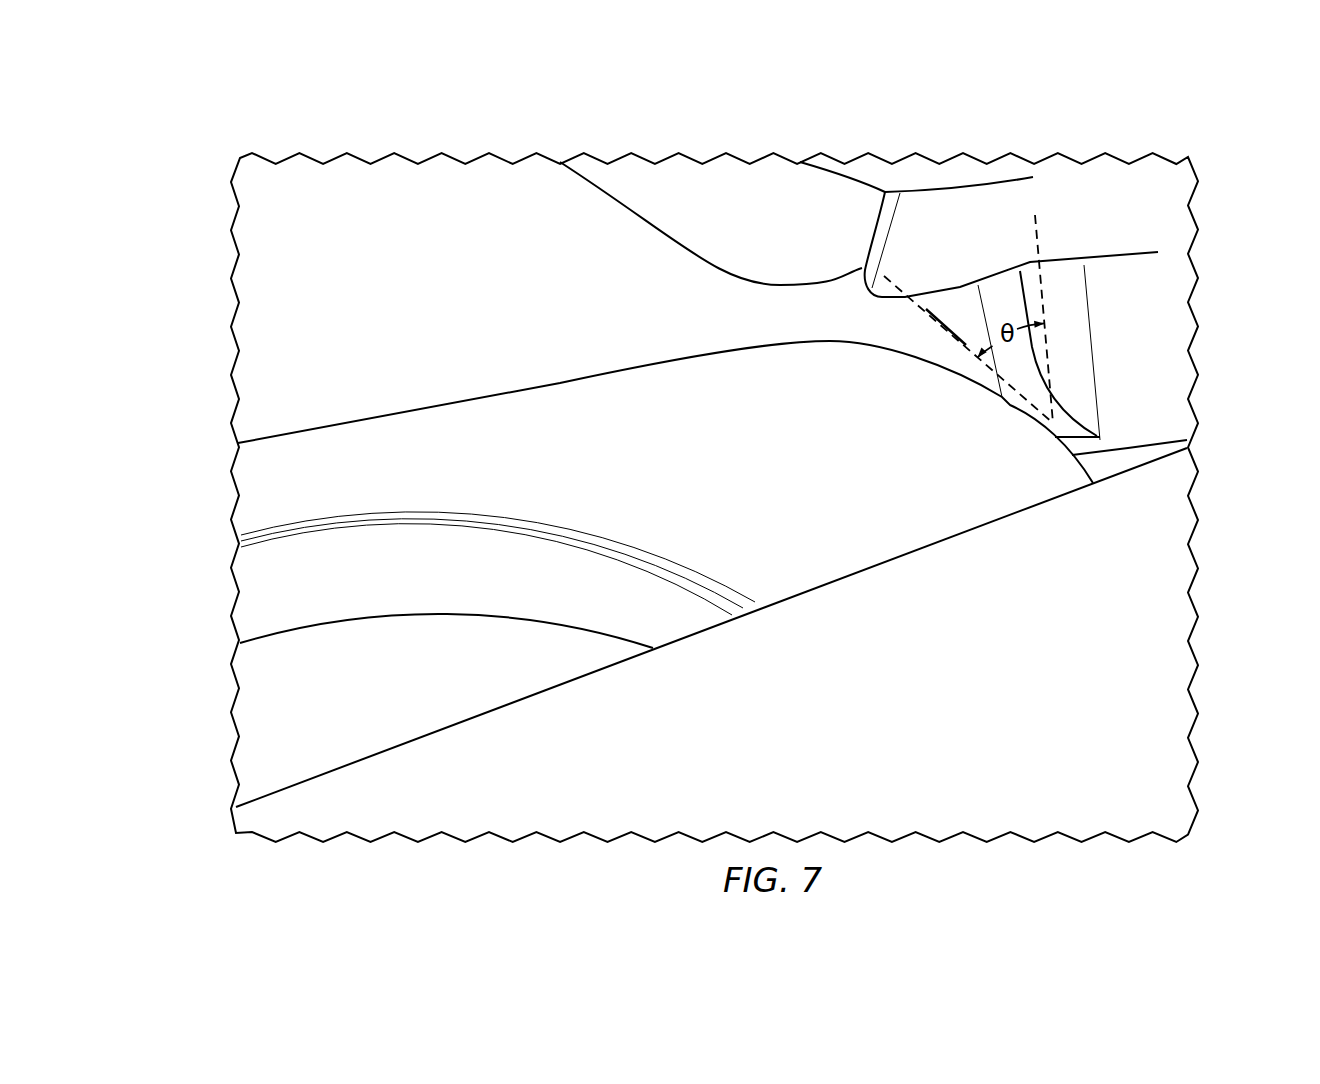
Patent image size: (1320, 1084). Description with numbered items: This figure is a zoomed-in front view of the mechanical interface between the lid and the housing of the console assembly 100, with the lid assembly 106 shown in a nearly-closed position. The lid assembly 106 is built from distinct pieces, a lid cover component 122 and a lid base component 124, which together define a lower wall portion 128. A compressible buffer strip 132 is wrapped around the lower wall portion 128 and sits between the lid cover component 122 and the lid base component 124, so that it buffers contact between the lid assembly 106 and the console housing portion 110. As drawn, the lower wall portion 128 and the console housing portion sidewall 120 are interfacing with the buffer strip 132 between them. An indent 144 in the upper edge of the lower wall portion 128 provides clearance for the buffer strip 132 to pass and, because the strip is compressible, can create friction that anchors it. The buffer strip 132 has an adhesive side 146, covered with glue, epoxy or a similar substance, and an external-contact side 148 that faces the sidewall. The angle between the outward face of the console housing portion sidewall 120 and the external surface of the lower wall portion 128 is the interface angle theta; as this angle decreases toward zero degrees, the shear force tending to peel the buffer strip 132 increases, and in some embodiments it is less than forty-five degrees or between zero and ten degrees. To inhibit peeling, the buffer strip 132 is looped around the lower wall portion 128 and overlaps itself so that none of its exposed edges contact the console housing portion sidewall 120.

The console assembly 100 is at (671, 465).
The lid assembly 106 is at (916, 202).
The console housing portion 110 is at (797, 580).
The console housing portion sidewall 120 is at (1129, 477).
The lid cover component 122 is at (1193, 227).
The lid base component 124 is at (1190, 377).
The lower wall portion 128 is at (1107, 352).
The buffer strip 132 is at (938, 303).
The indent 144 is at (665, 385).
The adhesive side 146 is at (1039, 326).
The external-contact side 148 is at (917, 345).